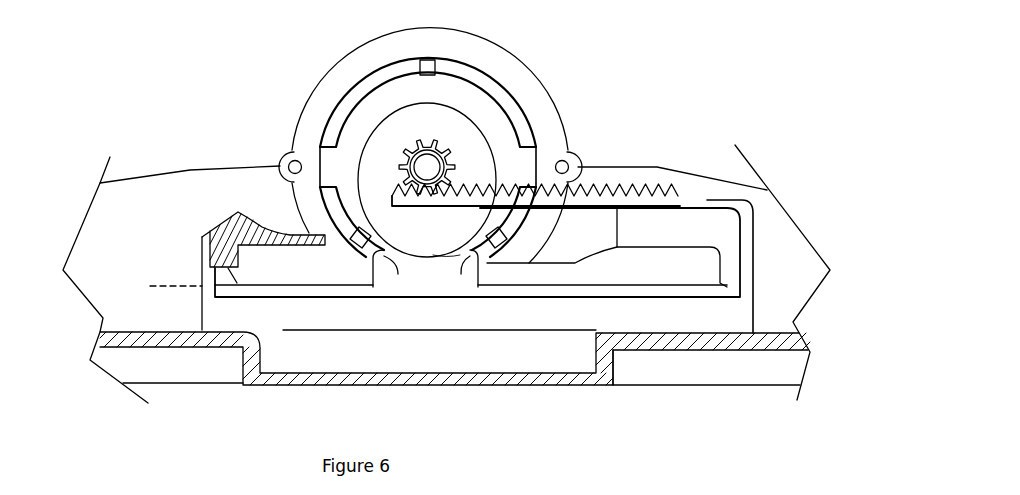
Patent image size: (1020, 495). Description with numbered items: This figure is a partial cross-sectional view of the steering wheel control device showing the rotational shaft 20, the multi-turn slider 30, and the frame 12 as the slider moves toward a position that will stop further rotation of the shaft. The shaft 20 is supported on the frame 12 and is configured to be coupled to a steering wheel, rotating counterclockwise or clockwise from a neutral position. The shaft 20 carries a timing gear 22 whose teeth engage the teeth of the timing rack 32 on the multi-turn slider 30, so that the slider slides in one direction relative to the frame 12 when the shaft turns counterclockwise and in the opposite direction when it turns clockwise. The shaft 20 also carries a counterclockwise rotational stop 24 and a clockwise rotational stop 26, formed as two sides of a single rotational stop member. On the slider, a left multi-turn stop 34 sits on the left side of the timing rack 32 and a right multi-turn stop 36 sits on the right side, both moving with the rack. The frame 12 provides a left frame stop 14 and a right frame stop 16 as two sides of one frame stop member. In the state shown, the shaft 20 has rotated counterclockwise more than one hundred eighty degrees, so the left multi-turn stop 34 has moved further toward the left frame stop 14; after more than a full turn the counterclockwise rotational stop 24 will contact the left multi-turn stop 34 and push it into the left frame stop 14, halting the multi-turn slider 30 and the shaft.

The frame 12 is at (637, 373).
The left frame stop 14 is at (395, 271).
The right frame stop 16 is at (467, 274).
The rotational shaft 20 is at (505, 50).
The timing gear 22 is at (432, 140).
The counterclockwise rotational stop 24 is at (458, 218).
The clockwise rotational stop 26 is at (369, 214).
The multi-turn slider 30 is at (713, 202).
The timing rack 32 is at (583, 186).
The left multi-turn stop 34 is at (230, 230).
The right multi-turn stop 36 is at (697, 237).